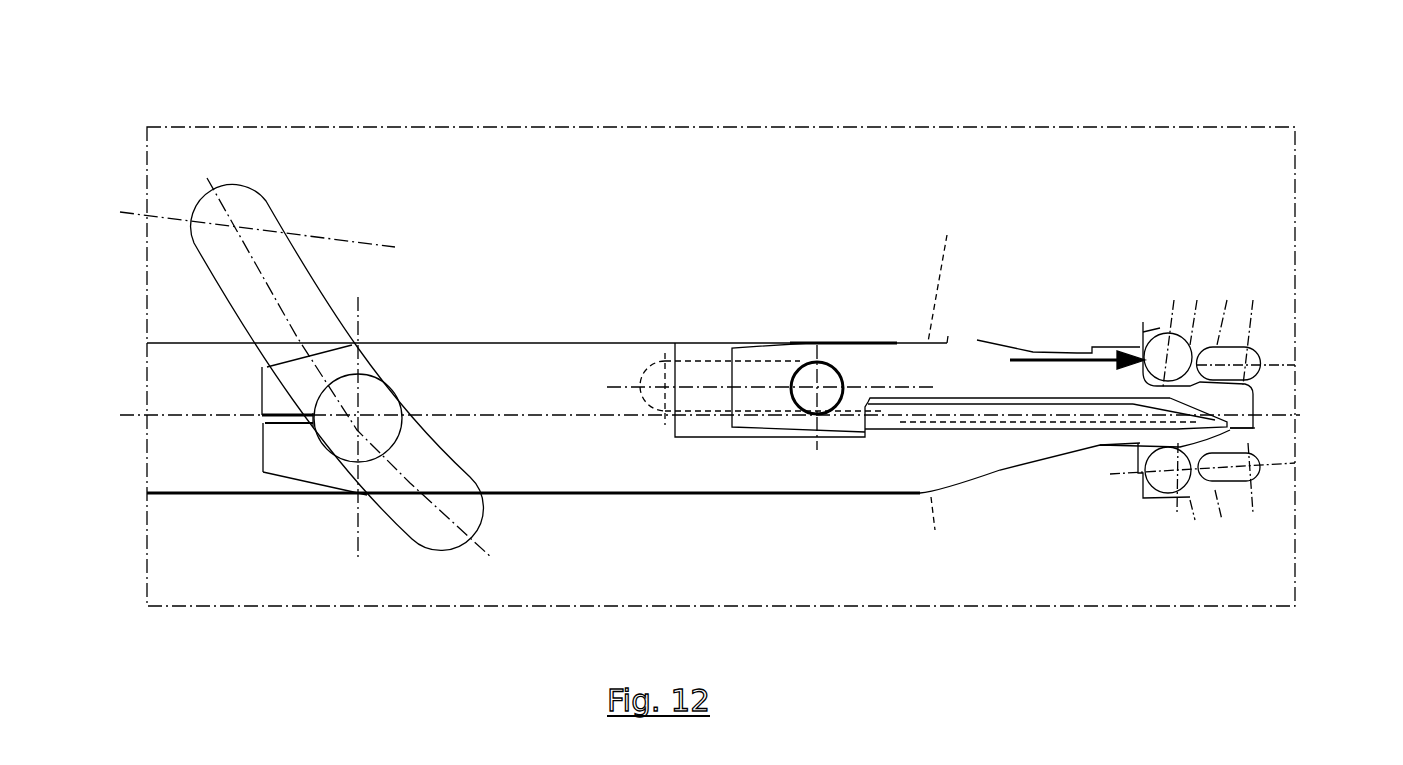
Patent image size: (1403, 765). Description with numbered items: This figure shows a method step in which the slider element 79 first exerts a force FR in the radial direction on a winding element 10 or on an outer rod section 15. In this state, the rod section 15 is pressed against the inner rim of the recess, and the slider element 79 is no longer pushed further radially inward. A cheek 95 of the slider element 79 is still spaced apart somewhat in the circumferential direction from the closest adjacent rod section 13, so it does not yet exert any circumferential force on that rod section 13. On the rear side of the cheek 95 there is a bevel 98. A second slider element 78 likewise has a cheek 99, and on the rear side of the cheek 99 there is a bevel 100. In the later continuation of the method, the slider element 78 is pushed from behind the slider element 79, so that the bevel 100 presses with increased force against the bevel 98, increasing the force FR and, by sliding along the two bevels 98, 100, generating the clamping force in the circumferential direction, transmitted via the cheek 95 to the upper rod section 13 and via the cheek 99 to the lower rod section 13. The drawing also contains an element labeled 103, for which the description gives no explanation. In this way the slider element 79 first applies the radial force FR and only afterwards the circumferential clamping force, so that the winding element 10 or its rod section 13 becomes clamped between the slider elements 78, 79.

The slider element 78 is at (595, 385).
The slider element 79 is at (882, 362).
The spring arm 103 is at (1015, 337).
The bevel 100 is at (1147, 300).
The outer rod section 15 is at (1170, 278).
The cheek 95 is at (1204, 315).
The rod section 13 is at (1250, 309).
The bevel 98 is at (1275, 446).
The winding element 10 is at (1085, 474).
The cheek 99 is at (1200, 516).
The force in the radial direction FR is at (1080, 353).